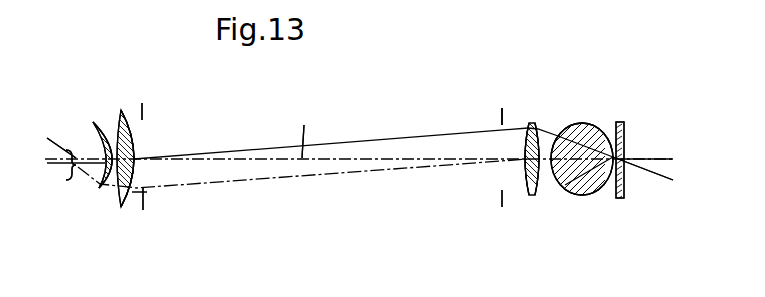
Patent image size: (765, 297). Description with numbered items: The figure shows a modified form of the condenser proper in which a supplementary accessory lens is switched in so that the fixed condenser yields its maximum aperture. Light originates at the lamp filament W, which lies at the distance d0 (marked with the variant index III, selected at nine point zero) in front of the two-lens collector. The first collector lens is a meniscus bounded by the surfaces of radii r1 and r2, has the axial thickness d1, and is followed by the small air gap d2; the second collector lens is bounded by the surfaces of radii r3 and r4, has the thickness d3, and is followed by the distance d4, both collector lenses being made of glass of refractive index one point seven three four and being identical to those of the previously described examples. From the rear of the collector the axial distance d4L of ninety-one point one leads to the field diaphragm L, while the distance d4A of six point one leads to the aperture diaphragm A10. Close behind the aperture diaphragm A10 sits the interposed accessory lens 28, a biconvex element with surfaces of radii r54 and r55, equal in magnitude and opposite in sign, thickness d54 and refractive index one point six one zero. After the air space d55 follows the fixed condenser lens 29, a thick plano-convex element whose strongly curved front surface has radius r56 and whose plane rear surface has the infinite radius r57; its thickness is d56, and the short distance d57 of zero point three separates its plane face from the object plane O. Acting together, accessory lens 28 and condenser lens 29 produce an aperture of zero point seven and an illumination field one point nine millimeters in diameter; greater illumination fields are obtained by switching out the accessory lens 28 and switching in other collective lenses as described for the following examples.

The condenser variant index III is at (88, 167).
The first surface radius of lens 1 r1 is at (99, 129).
The second surface radius of lens 1 r2 is at (101, 128).
The first surface radius of lens 2 r3 is at (118, 125).
The second surface radius of lens 2 r4 is at (125, 125).
The lamp filament distance d0 is at (45, 184).
The thickness of lens 1 d1 is at (103, 178).
The air gap between lenses 1 and 2 d2 is at (116, 192).
The thickness of lens 2 d3 is at (130, 177).
The distance behind lens 2 d4 is at (136, 158).
The lamp filament W is at (66, 173).
The field diaphragm L is at (145, 200).
The aperture diaphragm A10 is at (502, 202).
The distance to field diaphragm d4L is at (303, 121).
The distance to aperture diaphragm d4A is at (523, 158).
The accessory lens 28 is at (533, 197).
The condenser lens 29 is at (585, 178).
The front surface radius of lens 28 r54 is at (530, 126).
The rear surface radius of lens 28 r55 is at (535, 127).
The front surface radius of lens 29 r56 is at (573, 128).
The rear surface radius of lens 29 r57 is at (623, 122).
The thickness of lens 28 d54 is at (528, 197).
The air gap between lenses 28 and 29 d55 is at (538, 158).
The thickness of lens 29 d56 is at (588, 162).
The distance behind lens 29 d57 is at (624, 160).
The object plane O is at (623, 152).